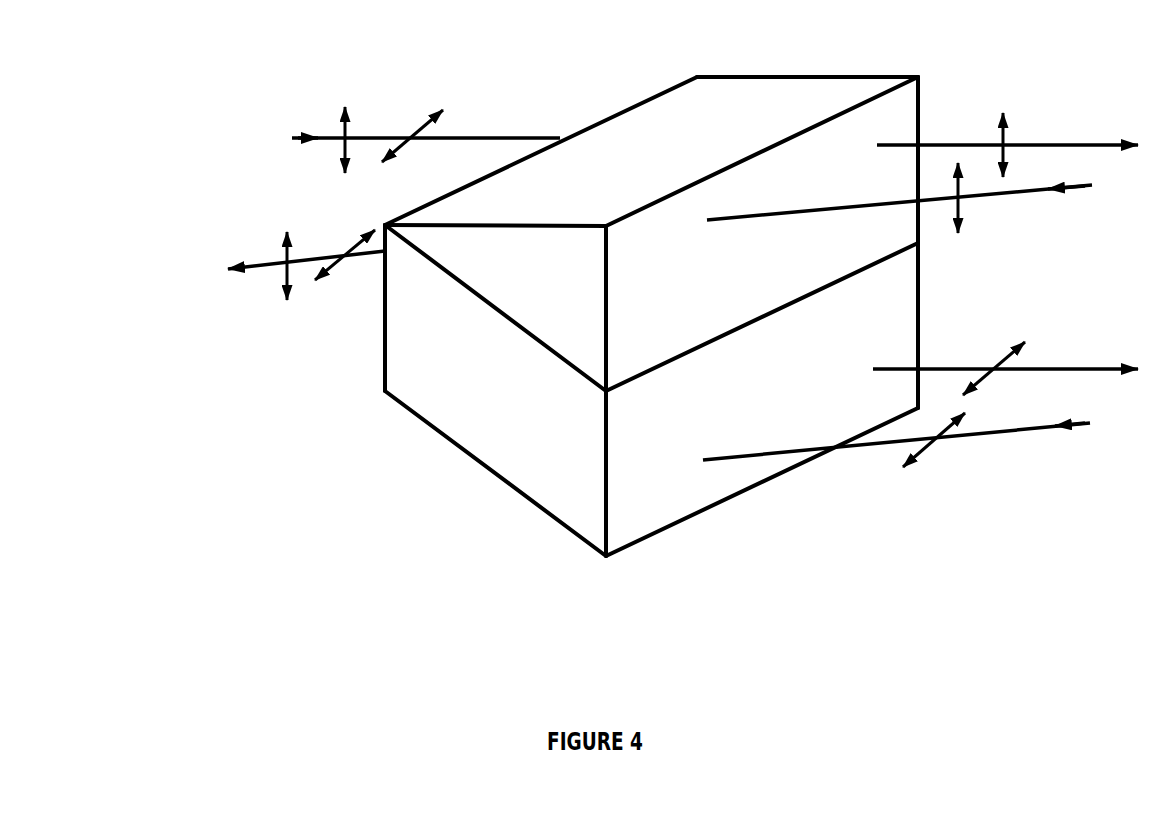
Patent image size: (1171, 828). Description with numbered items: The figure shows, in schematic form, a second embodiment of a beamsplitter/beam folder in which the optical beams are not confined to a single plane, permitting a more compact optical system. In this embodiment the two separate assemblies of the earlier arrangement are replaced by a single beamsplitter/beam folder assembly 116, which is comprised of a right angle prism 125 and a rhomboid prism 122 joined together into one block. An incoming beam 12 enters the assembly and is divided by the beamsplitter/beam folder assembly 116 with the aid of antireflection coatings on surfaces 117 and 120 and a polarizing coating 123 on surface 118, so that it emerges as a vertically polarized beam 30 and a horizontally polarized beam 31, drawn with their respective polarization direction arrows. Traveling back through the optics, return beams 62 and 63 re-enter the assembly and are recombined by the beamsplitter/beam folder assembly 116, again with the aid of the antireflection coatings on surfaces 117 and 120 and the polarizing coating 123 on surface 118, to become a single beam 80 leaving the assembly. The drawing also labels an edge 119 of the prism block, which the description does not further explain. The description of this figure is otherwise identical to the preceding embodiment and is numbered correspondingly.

The beam 12 is at (327, 137).
The vertically polarized beam 30 is at (1073, 143).
The horizontally polarized beam 31 is at (1067, 369).
The return beam 62 is at (1023, 433).
The return beam 63 is at (1015, 193).
The beam 80 is at (260, 267).
The beamsplitter/beam folder assembly 116 is at (732, 76).
The surface 117 is at (385, 345).
The surface 118 is at (427, 260).
The bottom edge of beam splitter cube 119 is at (558, 527).
The surface 120 is at (648, 502).
The rhomboid prism 122 is at (523, 435).
The polarizing coating 123 is at (442, 273).
The right angle prism 125 is at (895, 110).